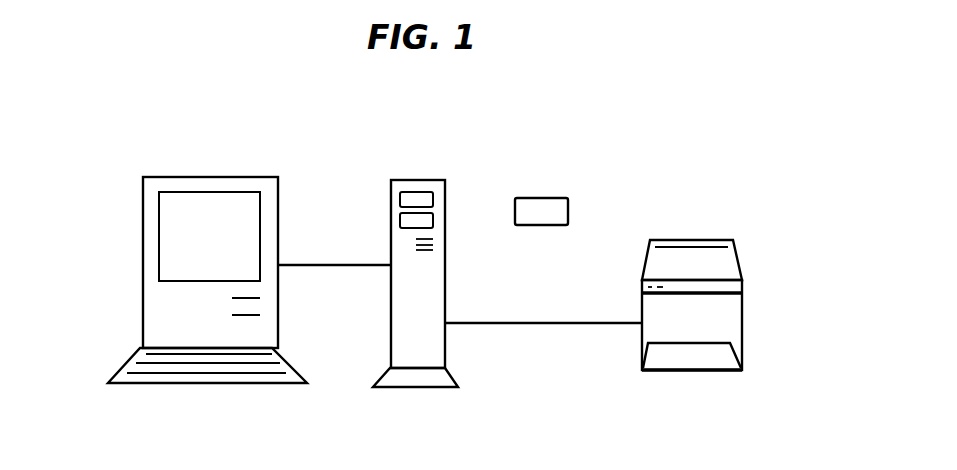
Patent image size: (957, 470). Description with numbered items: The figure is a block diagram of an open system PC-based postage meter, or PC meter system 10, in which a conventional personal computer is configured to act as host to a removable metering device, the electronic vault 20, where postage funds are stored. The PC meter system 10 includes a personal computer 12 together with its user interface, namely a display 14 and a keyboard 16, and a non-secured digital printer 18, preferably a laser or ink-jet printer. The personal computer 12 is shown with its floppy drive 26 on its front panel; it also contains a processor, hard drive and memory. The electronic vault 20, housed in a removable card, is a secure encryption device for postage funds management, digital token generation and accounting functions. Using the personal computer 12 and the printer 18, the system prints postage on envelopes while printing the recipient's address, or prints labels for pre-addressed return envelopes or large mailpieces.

The PC meter system 10 is at (638, 104).
The personal computer 12 is at (445, 292).
The display 14 is at (143, 230).
The keyboard 16 is at (121, 372).
The non-secured digital printer 18 is at (742, 271).
The electronic vault 20 is at (552, 198).
The floppy drive 26 is at (400, 200).